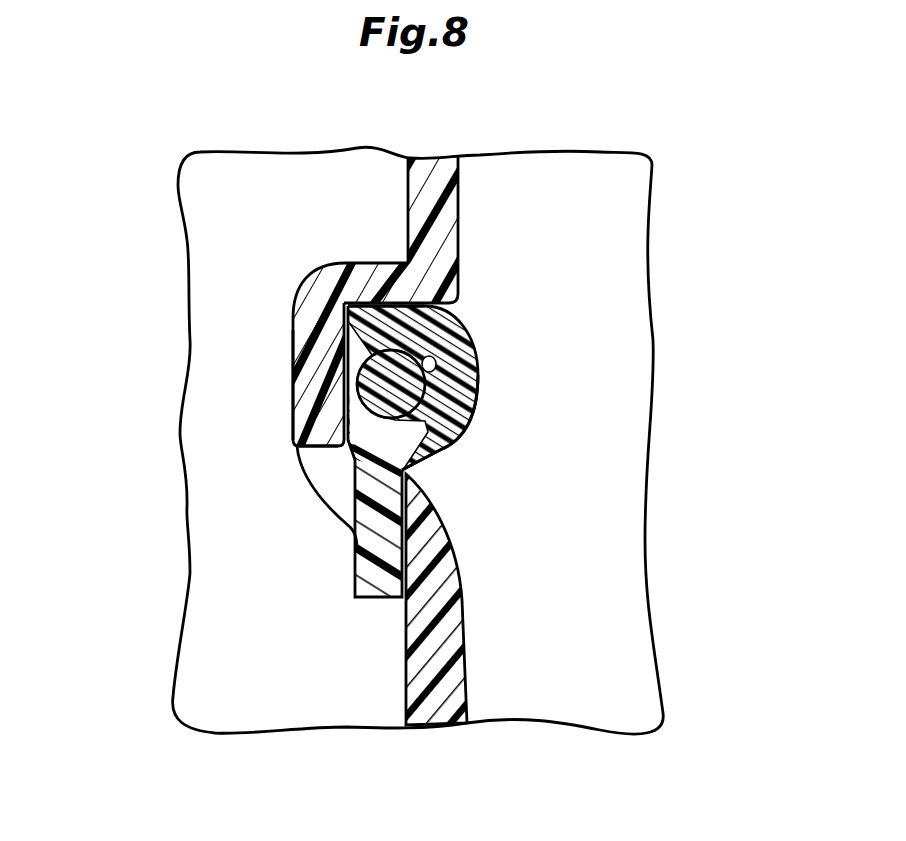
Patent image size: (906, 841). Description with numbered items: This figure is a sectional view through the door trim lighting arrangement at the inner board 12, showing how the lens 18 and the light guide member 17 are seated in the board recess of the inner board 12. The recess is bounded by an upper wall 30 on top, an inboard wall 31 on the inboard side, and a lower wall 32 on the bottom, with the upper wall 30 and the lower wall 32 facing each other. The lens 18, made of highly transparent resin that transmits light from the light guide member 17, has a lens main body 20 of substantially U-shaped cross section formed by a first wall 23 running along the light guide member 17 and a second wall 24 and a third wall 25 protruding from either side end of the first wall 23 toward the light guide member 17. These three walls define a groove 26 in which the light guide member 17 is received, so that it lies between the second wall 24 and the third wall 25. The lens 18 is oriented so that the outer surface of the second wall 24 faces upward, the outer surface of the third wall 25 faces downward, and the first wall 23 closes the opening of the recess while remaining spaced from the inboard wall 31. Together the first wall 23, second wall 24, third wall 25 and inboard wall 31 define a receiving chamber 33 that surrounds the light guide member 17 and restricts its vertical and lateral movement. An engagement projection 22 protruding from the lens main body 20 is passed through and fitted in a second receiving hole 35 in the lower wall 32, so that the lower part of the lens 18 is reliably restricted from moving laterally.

The inner board 12 is at (450, 221).
The upper wall 30 is at (371, 273).
The light guide member 17 is at (352, 390).
The inboard wall 31 is at (313, 408).
The receiving chamber 33 is at (303, 440).
The lower wall 32 is at (337, 503).
The lens main body 20 is at (463, 387).
The second wall 24 is at (403, 327).
The first wall 23 is at (453, 400).
The third wall 25 is at (407, 443).
The engagement projection 22 is at (373, 580).
The groove 26 is at (385, 380).
The lens 18 is at (433, 433).
The second receiving hole 35 is at (406, 600).